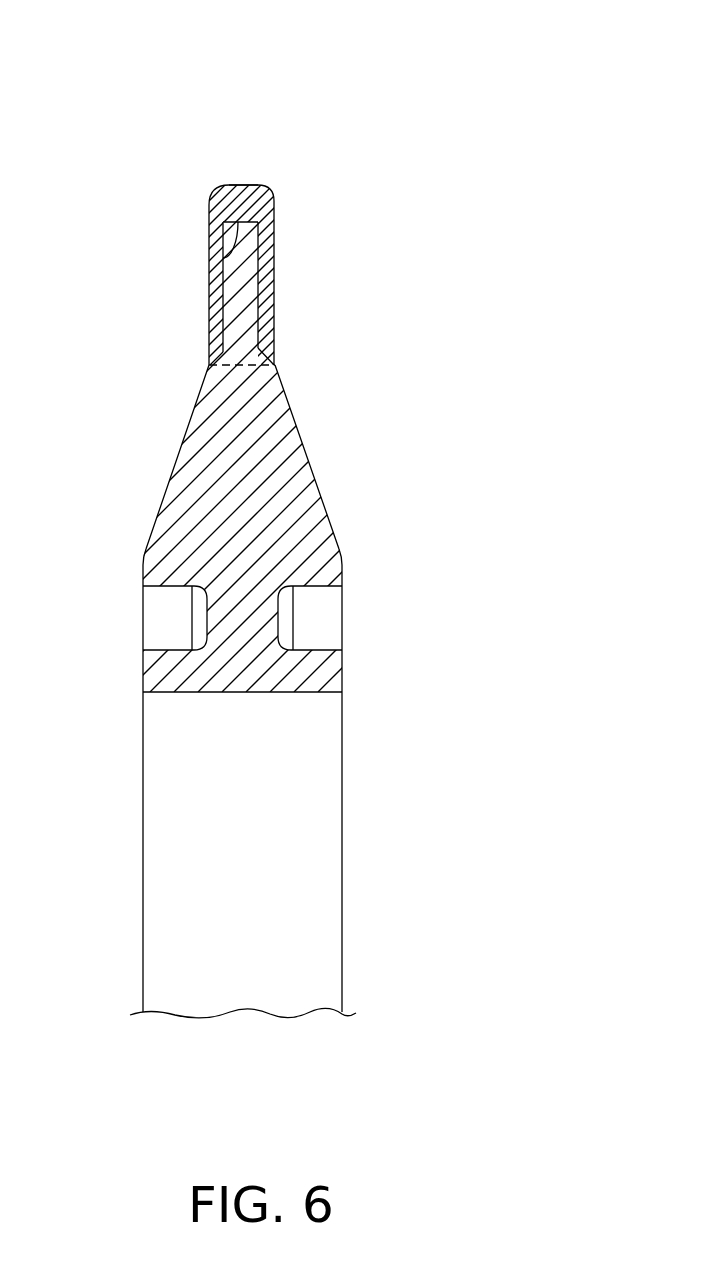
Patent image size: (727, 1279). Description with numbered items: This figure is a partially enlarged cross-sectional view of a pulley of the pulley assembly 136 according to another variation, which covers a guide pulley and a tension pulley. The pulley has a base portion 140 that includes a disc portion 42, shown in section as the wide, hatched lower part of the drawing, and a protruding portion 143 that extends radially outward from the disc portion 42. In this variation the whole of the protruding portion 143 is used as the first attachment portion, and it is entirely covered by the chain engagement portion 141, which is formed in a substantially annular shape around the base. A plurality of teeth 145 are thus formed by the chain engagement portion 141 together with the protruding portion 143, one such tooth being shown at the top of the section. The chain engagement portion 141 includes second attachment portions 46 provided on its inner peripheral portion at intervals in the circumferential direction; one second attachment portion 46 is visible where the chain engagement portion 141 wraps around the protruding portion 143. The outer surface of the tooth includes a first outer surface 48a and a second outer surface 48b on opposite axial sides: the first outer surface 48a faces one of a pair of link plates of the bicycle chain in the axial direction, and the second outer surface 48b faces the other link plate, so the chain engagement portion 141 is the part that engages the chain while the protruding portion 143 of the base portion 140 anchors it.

The pulley assembly 136 is at (348, 113).
The chain engagement portion 141 is at (236, 173).
The teeth 145 is at (316, 237).
The protruding portion 143 is at (251, 280).
The second attachment portion 46 is at (221, 250).
The first outer surface 48a is at (209, 307).
The second outer surface 48b is at (275, 318).
The disc portion 42 is at (185, 515).
The base portion 140 is at (348, 535).